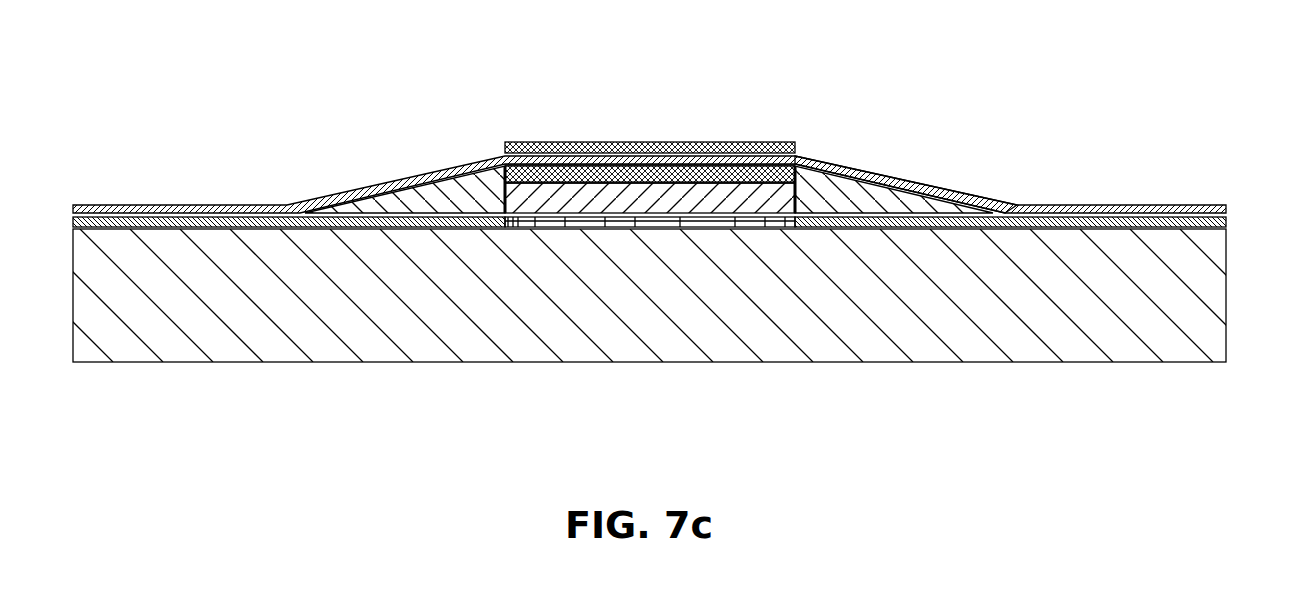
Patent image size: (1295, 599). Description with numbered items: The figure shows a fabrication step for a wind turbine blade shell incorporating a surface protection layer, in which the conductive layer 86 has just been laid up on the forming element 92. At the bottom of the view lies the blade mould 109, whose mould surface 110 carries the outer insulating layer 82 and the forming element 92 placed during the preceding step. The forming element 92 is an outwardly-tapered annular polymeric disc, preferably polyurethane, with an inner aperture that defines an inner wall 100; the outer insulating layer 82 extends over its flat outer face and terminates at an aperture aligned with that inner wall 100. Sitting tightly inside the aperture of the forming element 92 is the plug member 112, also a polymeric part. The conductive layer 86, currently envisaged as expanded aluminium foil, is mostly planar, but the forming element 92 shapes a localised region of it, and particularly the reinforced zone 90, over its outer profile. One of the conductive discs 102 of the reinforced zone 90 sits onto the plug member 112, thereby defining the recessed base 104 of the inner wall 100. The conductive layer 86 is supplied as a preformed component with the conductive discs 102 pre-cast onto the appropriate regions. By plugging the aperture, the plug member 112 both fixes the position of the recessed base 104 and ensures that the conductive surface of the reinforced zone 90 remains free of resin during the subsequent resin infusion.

The reinforced zone 90 is at (457, 102).
The conductive disc 102 is at (558, 178).
The recessed base 104 is at (702, 186).
The inner wall 100 is at (790, 186).
The conductive layer 86 is at (957, 200).
The mould surface 110 is at (1112, 228).
The outer insulating layer 82 is at (1218, 221).
The blade mould 109 is at (1218, 296).
The forming element 92 is at (415, 204).
The plug member 112 is at (682, 210).